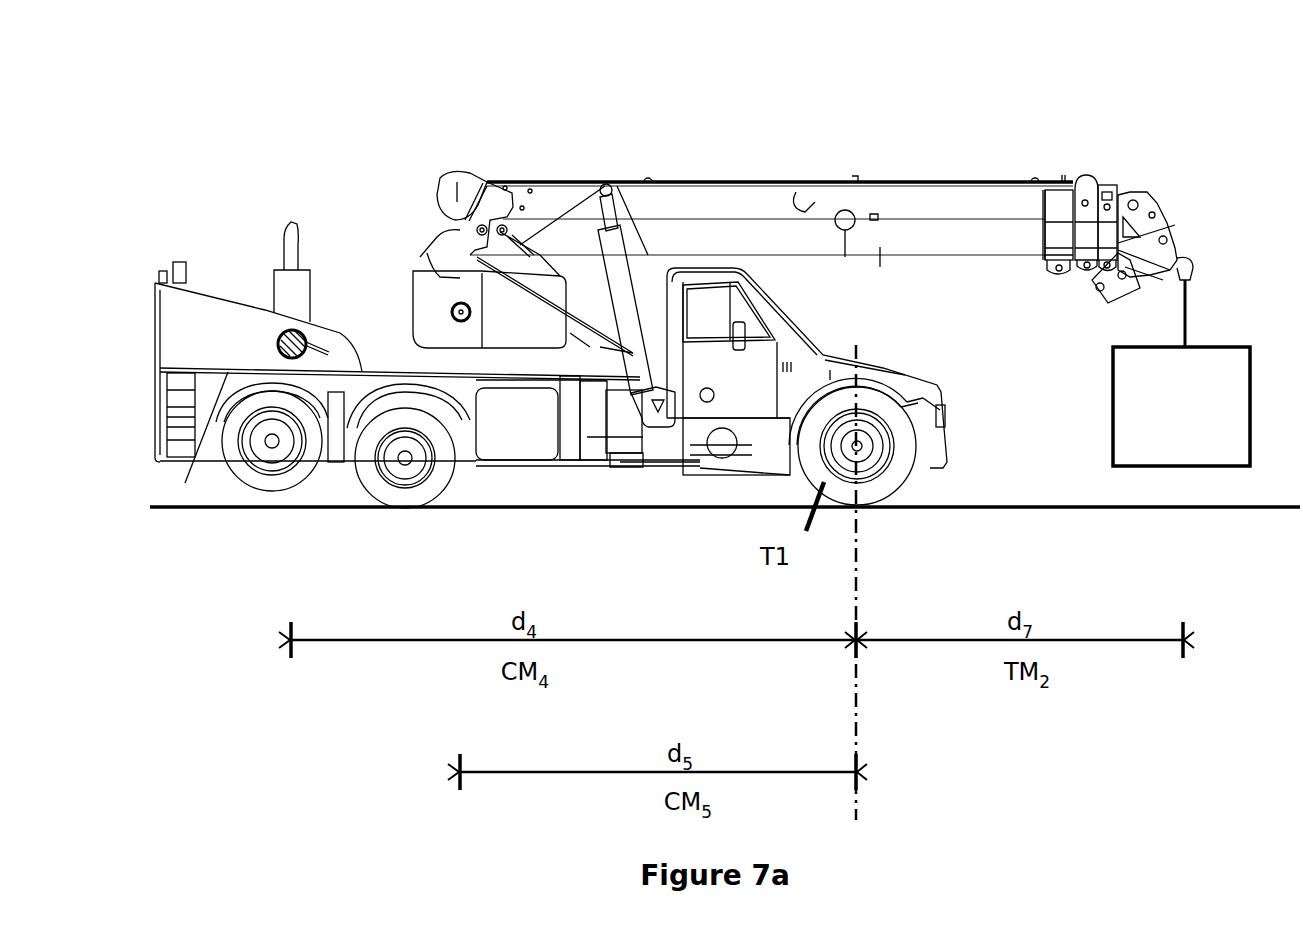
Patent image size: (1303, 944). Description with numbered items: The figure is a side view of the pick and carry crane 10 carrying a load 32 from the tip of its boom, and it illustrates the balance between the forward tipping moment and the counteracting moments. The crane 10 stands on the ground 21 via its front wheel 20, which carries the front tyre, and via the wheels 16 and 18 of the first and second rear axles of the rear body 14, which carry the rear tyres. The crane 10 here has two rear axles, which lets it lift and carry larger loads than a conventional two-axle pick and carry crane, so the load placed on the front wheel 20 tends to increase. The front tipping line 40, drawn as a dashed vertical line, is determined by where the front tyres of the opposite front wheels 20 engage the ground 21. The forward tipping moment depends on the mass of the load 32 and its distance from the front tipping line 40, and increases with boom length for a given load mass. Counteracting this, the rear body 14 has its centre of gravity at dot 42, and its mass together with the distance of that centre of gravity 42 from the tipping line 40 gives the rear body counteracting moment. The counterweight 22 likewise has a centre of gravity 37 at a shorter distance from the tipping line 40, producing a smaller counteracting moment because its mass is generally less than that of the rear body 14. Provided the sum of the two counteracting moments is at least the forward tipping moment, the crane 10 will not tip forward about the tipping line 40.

The pick and carry crane 10 is at (262, 153).
The rear body 14 is at (135, 300).
The wheel 16 is at (272, 499).
The wheel 18 is at (401, 515).
The front wheel 20 is at (880, 520).
The ground 21 is at (1042, 510).
The counterweight 22 is at (410, 303).
The load 32 is at (1167, 431).
The centre of gravity 37 is at (450, 306).
The front tipping line 40 is at (865, 693).
The centre of gravity 42 is at (273, 340).